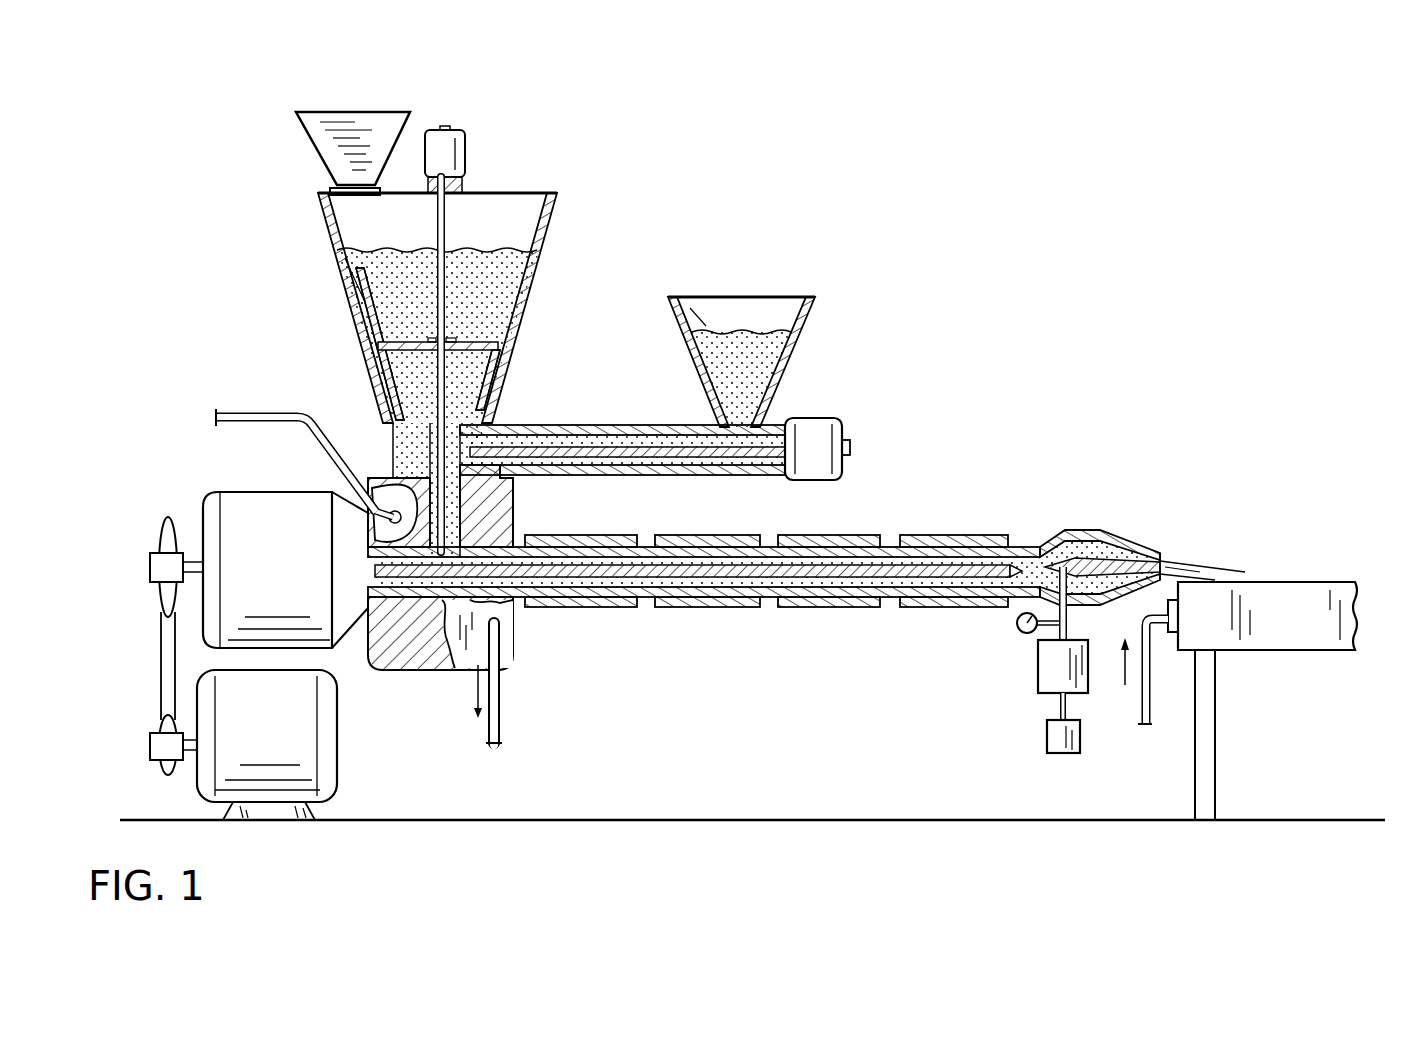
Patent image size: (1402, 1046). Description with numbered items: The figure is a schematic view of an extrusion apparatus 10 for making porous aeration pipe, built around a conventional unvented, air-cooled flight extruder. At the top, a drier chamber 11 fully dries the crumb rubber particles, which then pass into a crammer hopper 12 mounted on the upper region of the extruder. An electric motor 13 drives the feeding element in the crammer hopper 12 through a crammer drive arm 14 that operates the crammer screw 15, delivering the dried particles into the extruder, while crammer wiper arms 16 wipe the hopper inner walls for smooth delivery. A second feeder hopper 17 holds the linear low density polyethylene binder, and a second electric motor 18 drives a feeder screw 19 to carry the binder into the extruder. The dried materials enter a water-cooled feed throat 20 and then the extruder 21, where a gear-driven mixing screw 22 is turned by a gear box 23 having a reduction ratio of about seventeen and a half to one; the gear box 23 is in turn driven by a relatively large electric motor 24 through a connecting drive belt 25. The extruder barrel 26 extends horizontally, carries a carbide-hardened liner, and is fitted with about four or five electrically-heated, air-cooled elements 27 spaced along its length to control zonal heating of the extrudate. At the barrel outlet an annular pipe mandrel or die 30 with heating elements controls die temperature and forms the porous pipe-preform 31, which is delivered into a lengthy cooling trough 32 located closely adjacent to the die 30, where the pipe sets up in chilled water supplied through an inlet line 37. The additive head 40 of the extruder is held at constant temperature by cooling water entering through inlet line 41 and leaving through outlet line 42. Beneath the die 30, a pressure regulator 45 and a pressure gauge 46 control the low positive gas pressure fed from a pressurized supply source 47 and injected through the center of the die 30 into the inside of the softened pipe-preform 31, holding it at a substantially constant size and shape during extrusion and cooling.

The extrusion apparatus 10 is at (853, 714).
The drier chamber 11 is at (356, 128).
The crammer hopper 12 is at (549, 246).
The electric motor 13 is at (465, 152).
The crammer drive arm 14 is at (448, 232).
The crammer screw 15 is at (437, 470).
The crammer wiper arms 16 is at (494, 368).
The second feeder hopper 17 is at (812, 328).
The second electric motor 18 is at (822, 418).
The feeder screw 19 is at (613, 440).
The feed throat 20 is at (415, 496).
The extruder 21 is at (386, 500).
The mixing screw 22 is at (456, 652).
The gear box 23 is at (236, 492).
The electric motor 24 is at (337, 758).
The drive belt 25 is at (160, 690).
The extruder barrel 26 is at (857, 524).
The electrically-heated, air-cooled elements 27 is at (954, 607).
The die 30 is at (1076, 522).
The pipe-preform 31 is at (1172, 560).
The cooling trough 32 is at (1272, 597).
The inlet line 37 is at (1150, 722).
The additive head 40 is at (514, 406).
The inlet line 41 is at (306, 436).
The outlet line 42 is at (503, 701).
The pressure regulator 45 is at (1038, 678).
The pressure gauge 46 is at (1022, 634).
The pressurized supply source 47 is at (1048, 740).